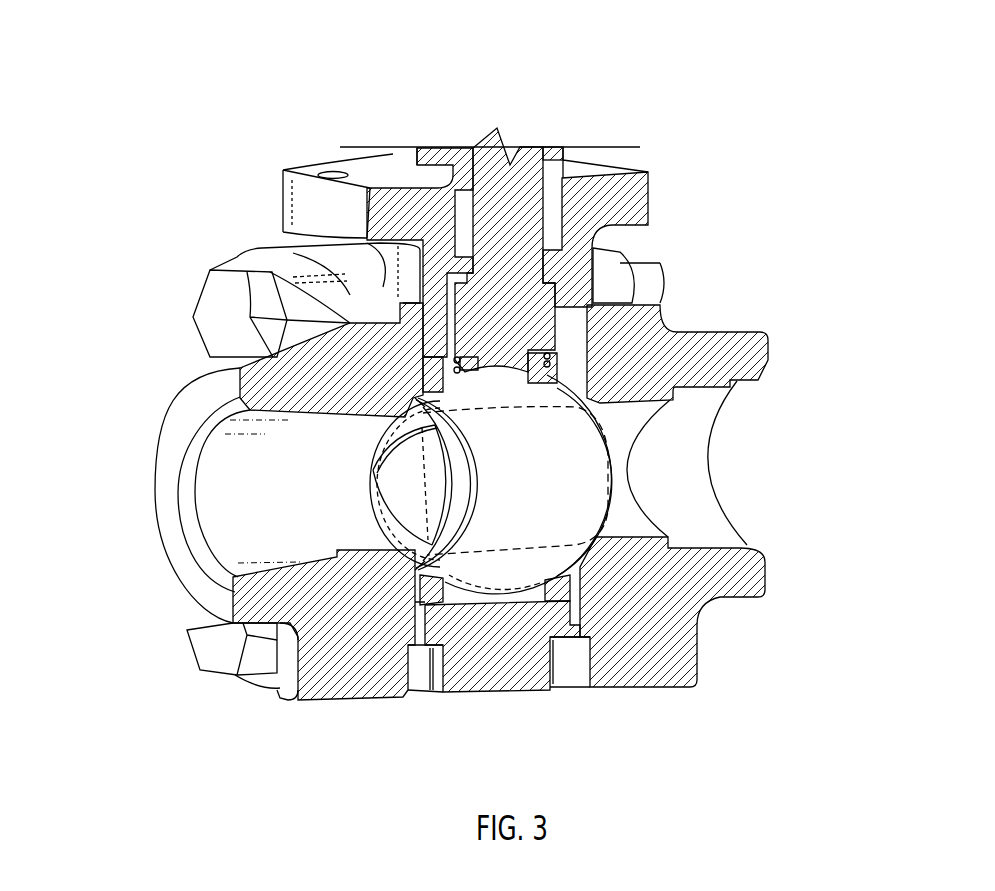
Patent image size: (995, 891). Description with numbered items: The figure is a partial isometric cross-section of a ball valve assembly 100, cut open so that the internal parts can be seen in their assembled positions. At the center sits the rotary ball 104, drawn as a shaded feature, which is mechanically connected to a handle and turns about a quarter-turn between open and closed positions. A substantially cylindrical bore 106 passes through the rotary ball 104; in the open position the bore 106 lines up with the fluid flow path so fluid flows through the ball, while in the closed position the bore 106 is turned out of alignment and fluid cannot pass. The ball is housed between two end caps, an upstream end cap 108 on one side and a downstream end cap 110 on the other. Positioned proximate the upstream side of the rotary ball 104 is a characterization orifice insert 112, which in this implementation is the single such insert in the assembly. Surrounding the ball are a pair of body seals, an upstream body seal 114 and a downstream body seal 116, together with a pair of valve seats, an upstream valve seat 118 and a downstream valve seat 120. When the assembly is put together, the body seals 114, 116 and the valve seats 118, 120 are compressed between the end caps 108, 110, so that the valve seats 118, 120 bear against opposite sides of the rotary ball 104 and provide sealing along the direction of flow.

The ball valve assembly 100 is at (266, 84).
The rotary ball 104 is at (607, 589).
The bore 106 is at (487, 567).
The upstream end cap 108 is at (163, 590).
The downstream end cap 110 is at (754, 623).
The characterization orifice insert 112 is at (385, 431).
The upstream body seal 114 is at (413, 333).
The downstream body seal 116 is at (602, 332).
The upstream valve seat 118 is at (415, 372).
The downstream valve seat 120 is at (607, 367).